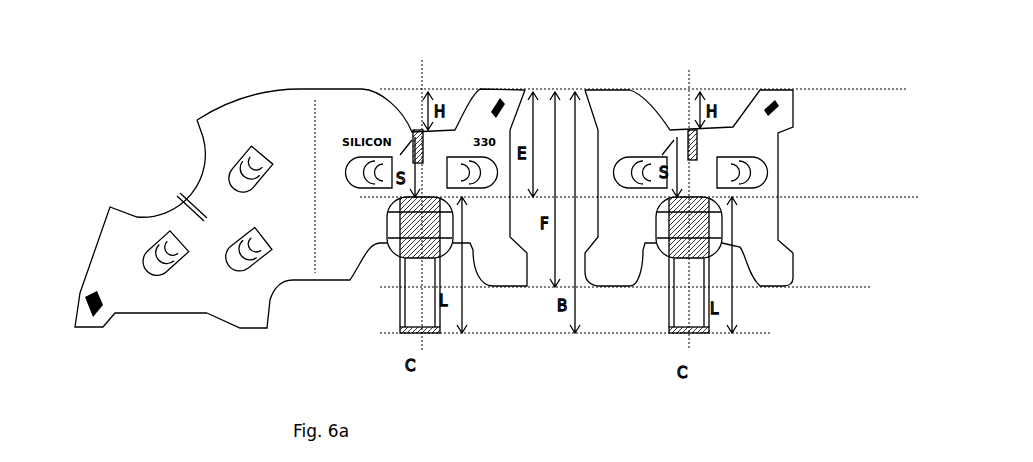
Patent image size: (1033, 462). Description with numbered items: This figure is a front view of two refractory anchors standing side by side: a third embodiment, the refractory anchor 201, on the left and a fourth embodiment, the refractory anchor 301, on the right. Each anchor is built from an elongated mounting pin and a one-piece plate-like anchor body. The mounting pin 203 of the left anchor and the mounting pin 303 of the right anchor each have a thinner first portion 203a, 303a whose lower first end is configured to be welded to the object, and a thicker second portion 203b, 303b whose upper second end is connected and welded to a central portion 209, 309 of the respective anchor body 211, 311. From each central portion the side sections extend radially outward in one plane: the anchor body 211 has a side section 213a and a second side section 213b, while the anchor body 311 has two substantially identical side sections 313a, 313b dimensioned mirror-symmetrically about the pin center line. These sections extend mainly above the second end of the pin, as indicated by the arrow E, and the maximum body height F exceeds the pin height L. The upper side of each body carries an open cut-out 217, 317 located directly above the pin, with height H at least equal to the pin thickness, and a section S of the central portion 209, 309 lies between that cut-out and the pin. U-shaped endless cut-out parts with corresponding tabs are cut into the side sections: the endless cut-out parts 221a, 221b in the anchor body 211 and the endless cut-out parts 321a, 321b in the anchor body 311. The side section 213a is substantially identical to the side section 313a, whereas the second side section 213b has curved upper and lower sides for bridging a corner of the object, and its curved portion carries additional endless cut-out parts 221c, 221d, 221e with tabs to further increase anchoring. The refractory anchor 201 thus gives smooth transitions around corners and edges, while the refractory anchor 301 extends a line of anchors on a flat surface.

The refractory anchor 201 is at (176, 96).
The elongated mounting pin 203 is at (386, 292).
The first portion of the elongated mounting pin 203a is at (408, 323).
The second portion of the elongated mounting pin 203b is at (412, 225).
The central portion 209 is at (435, 172).
The anchor body 211 is at (301, 314).
The side section 213a is at (497, 253).
The second side section 213b is at (273, 92).
The open cut-out 217 is at (386, 78).
The endless cut-out part 221a is at (486, 115).
The endless cut-out part 221b is at (331, 106).
The endless cut-out part 221c is at (230, 170).
The endless cut-out part 221d is at (240, 275).
The endless cut-out part 221e is at (143, 258).
The refractory anchor 301 is at (822, 121).
The elongated mounting pin 303 is at (662, 321).
The first portion of the elongated mounting pin 303a is at (707, 333).
The second portion of the elongated mounting pin 303b is at (693, 227).
The central portion 309 is at (707, 170).
The anchor body 311 is at (814, 321).
The side section 313a is at (824, 172).
The side section 313b is at (608, 268).
The open cut-out 317 is at (666, 66).
The endless cut-out part 321a is at (800, 170).
The endless cut-out part 321b is at (622, 187).